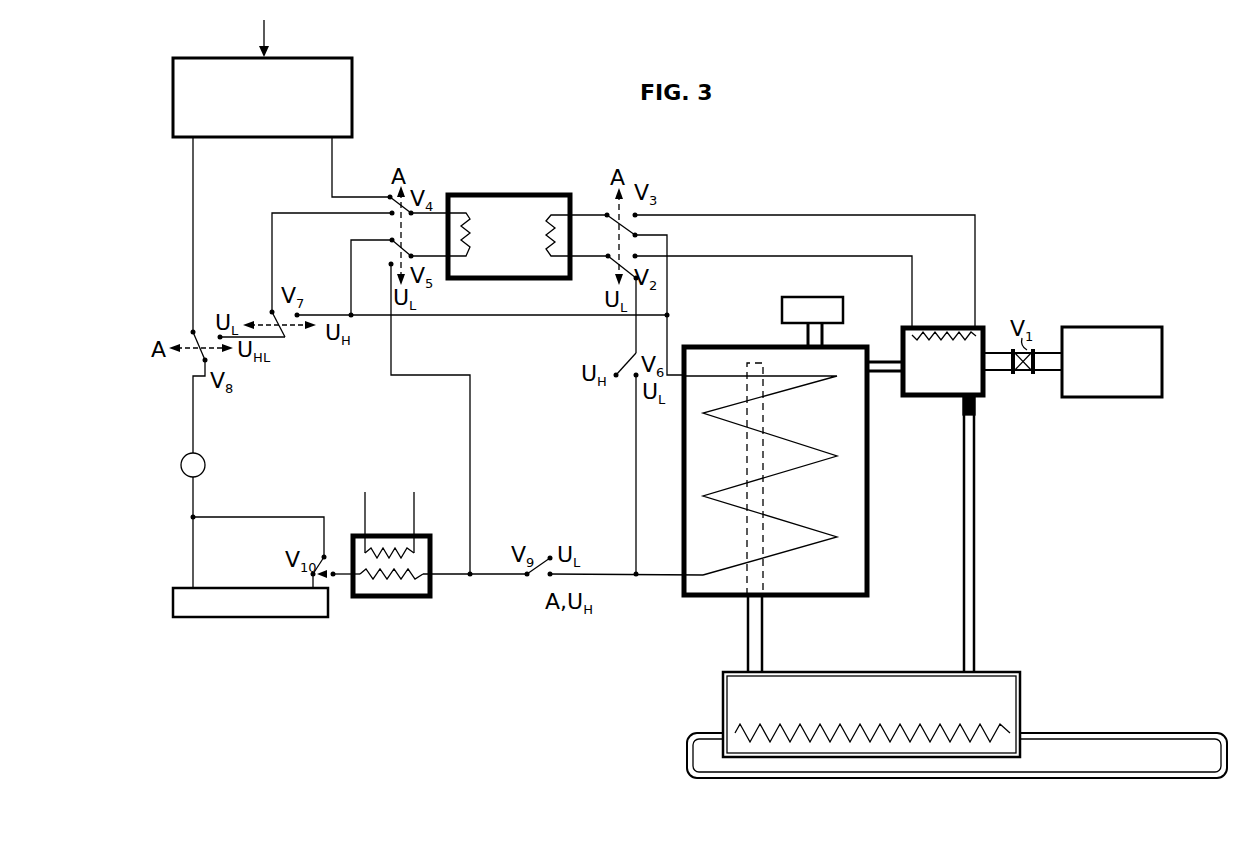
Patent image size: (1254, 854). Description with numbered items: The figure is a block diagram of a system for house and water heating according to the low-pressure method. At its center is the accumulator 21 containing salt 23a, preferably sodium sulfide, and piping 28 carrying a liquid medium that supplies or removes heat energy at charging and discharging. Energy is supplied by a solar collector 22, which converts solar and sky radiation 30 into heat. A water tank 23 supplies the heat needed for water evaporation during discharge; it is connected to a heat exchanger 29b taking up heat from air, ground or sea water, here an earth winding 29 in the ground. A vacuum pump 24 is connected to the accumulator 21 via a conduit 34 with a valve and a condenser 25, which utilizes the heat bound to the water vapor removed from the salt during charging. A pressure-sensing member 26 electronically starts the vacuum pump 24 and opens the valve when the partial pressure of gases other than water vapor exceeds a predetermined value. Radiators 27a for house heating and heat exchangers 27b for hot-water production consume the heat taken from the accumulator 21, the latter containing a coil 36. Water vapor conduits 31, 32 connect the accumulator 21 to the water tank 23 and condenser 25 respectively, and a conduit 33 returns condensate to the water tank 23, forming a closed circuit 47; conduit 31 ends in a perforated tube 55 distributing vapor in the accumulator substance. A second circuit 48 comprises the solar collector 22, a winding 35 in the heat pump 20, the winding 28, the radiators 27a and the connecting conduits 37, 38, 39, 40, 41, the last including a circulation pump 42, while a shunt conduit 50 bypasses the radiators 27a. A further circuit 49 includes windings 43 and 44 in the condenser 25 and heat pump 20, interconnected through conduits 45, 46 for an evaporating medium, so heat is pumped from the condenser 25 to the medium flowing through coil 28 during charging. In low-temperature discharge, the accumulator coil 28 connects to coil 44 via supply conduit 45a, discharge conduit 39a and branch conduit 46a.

The heat pump 20 is at (509, 236).
The accumulator 21 is at (870, 509).
The solar collector 22 is at (262, 97).
The water tank 23 is at (871, 714).
The salt 23a is at (835, 489).
The vacuum pump 24 is at (1112, 362).
The condenser 25 is at (943, 361).
The pressure-sensing member 26 is at (823, 297).
The radiators 27a is at (274, 619).
The heat exchangers 27b is at (352, 531).
The piping 28 is at (783, 389).
The earth winding 29 is at (1165, 733).
The heat exchanger 29b is at (949, 724).
The solar and sky radiation 30 is at (282, 34).
The conduit for water vapor 31 is at (765, 634).
The conduit for water vapor 32 is at (885, 374).
The conduit for condensed water vapor 33 is at (977, 560).
The conduit 34 is at (998, 373).
The winding 35 is at (479, 204).
The heating coil 36 is at (400, 580).
The conduit 37 is at (335, 157).
The conduit 38 is at (498, 315).
The conduit 39 is at (447, 576).
The discharge conduit 39a is at (660, 576).
The conduit 40 is at (342, 576).
The conduit 41 is at (196, 224).
The circulation pump 42 is at (181, 456).
The winding 43 is at (940, 332).
The winding 44 is at (549, 202).
The conduit 45 is at (842, 256).
The supply conduit 45a is at (670, 325).
The conduit 46 is at (842, 216).
The branch conduit 46a is at (636, 458).
The closed circuit 47 is at (916, 564).
The second circuit 48 is at (387, 419).
The further circuit 49 is at (763, 238).
The shunt conduit 50 is at (254, 517).
The perforated tube 55 is at (747, 452).